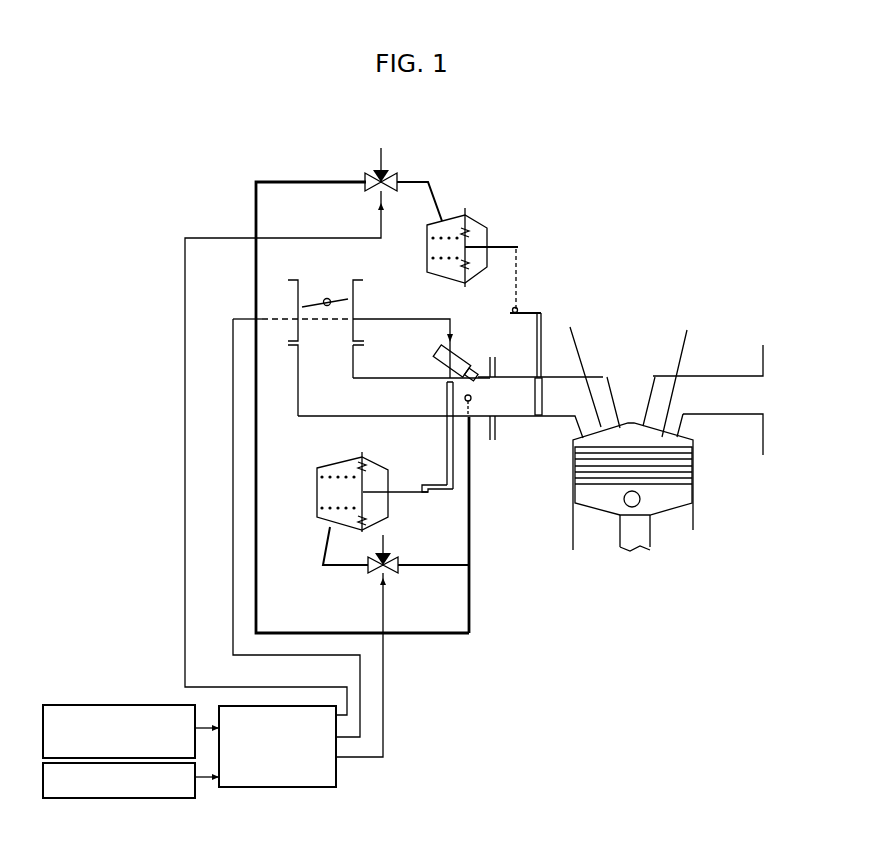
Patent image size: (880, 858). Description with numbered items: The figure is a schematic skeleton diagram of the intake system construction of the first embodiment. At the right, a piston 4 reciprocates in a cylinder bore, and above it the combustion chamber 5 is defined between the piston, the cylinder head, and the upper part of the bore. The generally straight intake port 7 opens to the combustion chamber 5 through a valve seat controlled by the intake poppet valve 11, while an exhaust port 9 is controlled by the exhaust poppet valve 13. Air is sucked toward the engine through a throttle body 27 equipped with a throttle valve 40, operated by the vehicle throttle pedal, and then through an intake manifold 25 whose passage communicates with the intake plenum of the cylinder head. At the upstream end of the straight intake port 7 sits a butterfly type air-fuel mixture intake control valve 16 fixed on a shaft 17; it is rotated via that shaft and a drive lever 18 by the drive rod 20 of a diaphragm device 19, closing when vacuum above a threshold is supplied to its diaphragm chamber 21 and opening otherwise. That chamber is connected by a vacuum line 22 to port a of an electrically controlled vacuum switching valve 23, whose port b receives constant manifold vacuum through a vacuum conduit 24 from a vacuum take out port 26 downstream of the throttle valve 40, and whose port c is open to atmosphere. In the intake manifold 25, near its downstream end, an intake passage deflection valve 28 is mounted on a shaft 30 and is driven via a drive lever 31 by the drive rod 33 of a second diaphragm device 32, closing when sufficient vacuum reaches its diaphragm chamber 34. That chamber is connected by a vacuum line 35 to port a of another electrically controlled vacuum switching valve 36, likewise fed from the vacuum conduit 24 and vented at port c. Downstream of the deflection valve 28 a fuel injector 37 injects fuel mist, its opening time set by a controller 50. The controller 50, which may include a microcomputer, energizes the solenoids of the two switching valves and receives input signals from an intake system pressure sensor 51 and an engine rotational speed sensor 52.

The piston 4 is at (682, 490).
The combustion chamber 5 is at (655, 442).
The intake port 7 is at (557, 382).
The exhaust port 9 is at (730, 375).
The intake poppet valve 11 is at (592, 393).
The exhaust poppet valve 13 is at (673, 393).
The air-fuel mixture intake control valve 16 is at (538, 417).
The shaft 17 is at (545, 322).
The drive lever 18 is at (520, 308).
The diaphragm device 19 is at (478, 212).
The drive rod 20 is at (503, 247).
The diaphragm chamber 21 is at (442, 272).
The vacuum line 22 is at (433, 187).
The electrically controlled vacuum switching valve 23 is at (390, 173).
The vacuum conduit 24 is at (305, 182).
The intake manifold 25 is at (395, 377).
The vacuum take out port 26 is at (473, 397).
The throttle body 27 is at (363, 287).
The intake passage deflection valve 28 is at (445, 393).
The shaft 30 is at (457, 470).
The drive lever 31 is at (442, 490).
The diaphragm device 32 is at (327, 467).
The drive rod 33 is at (410, 495).
The diaphragm chamber 34 is at (315, 490).
The vacuum line 35 is at (335, 567).
The electrically controlled vacuum switching valve 36 is at (390, 576).
The fuel injector 37 is at (453, 358).
The throttle valve 40 is at (341, 298).
The controller 50 is at (270, 787).
The intake system pressure sensor 51 is at (135, 703).
The engine rotational speed sensor 52 is at (77, 798).